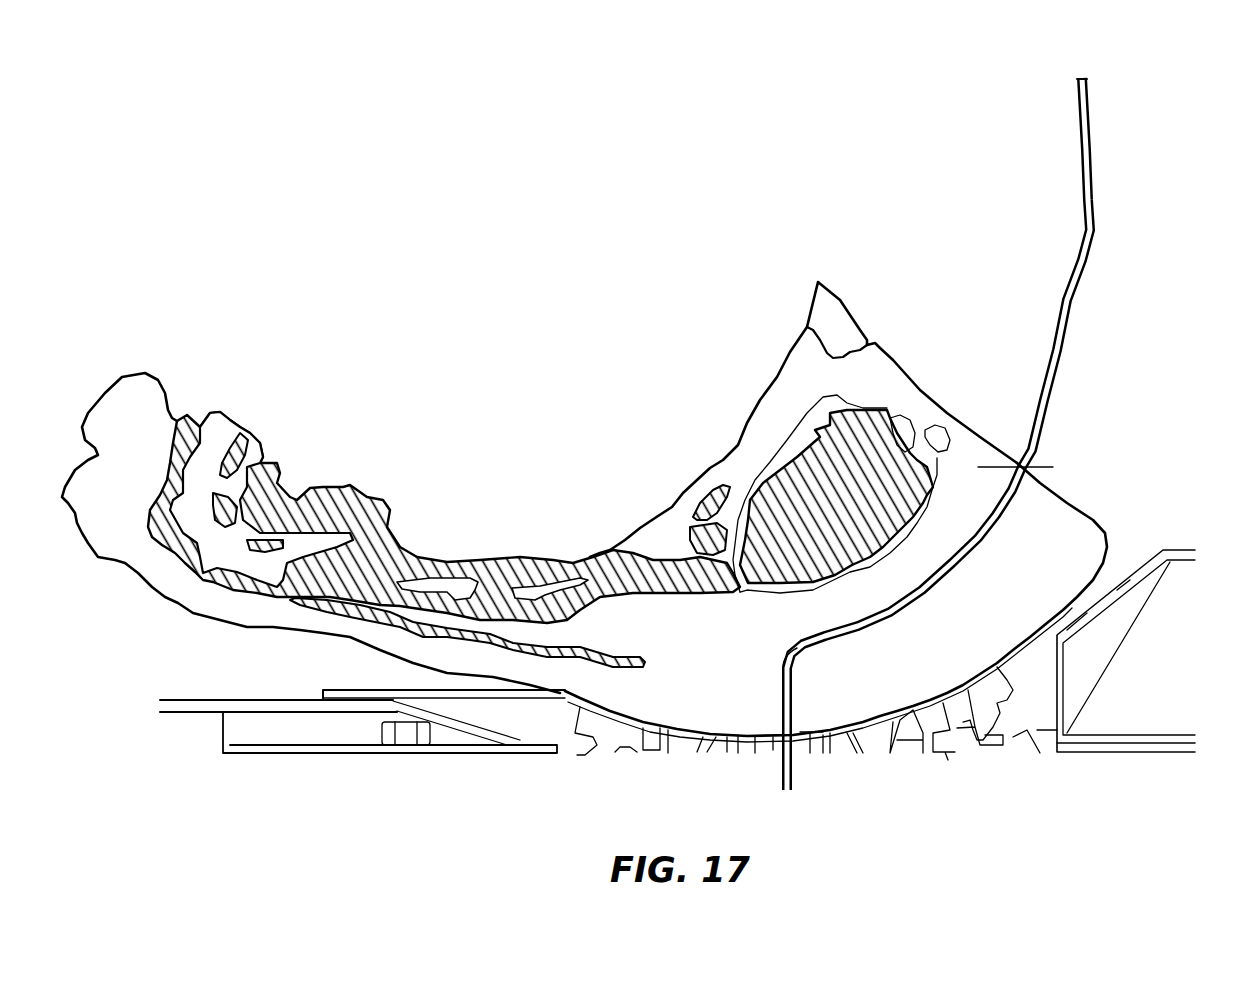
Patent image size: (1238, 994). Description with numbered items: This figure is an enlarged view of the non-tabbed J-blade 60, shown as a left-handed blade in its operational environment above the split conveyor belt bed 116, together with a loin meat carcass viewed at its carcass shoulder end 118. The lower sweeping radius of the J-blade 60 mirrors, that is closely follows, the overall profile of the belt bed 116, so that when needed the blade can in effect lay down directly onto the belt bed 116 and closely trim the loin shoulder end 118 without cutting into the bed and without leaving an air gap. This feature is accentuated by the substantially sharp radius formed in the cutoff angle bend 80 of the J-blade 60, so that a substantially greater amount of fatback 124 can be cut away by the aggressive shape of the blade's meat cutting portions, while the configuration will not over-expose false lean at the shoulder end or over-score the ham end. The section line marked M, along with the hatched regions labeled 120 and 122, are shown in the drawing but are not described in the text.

The J-blade 60 is at (1096, 226).
The cutoff angle bend 80 is at (800, 656).
The split conveyor belt bed 116 is at (360, 688).
The carcass shoulder end 118 is at (982, 422).
The tissue 120 is at (670, 593).
The hatched tissue portion 122 is at (870, 450).
The fatback 124 is at (1066, 540).
The section line M- M is at (1014, 468).